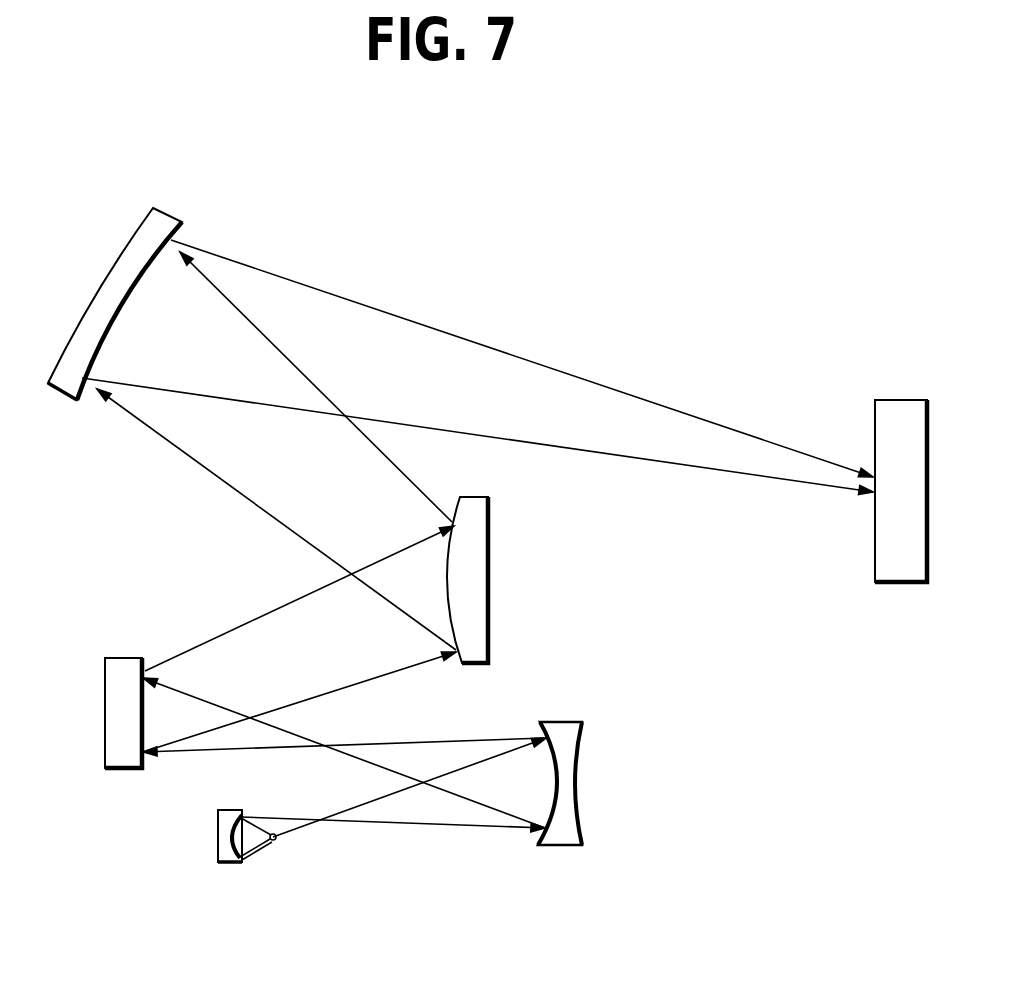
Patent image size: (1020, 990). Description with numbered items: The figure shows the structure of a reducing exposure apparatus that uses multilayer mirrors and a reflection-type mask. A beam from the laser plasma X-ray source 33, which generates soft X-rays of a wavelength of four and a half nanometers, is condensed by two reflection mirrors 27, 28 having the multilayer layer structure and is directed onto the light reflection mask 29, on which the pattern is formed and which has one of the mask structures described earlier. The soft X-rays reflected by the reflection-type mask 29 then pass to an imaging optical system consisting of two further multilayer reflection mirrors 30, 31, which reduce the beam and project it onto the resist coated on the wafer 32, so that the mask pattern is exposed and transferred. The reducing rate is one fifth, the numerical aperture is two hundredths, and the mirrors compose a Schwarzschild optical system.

The reflection mirror 27 is at (223, 863).
The reflection mirror 28 is at (572, 847).
The light reflection mask 29 is at (125, 658).
The reflection mirror 30 is at (490, 595).
The reflection mirror 31 is at (169, 208).
The wafer 32 is at (900, 400).
The laser plasma X-ray source 33 is at (278, 843).